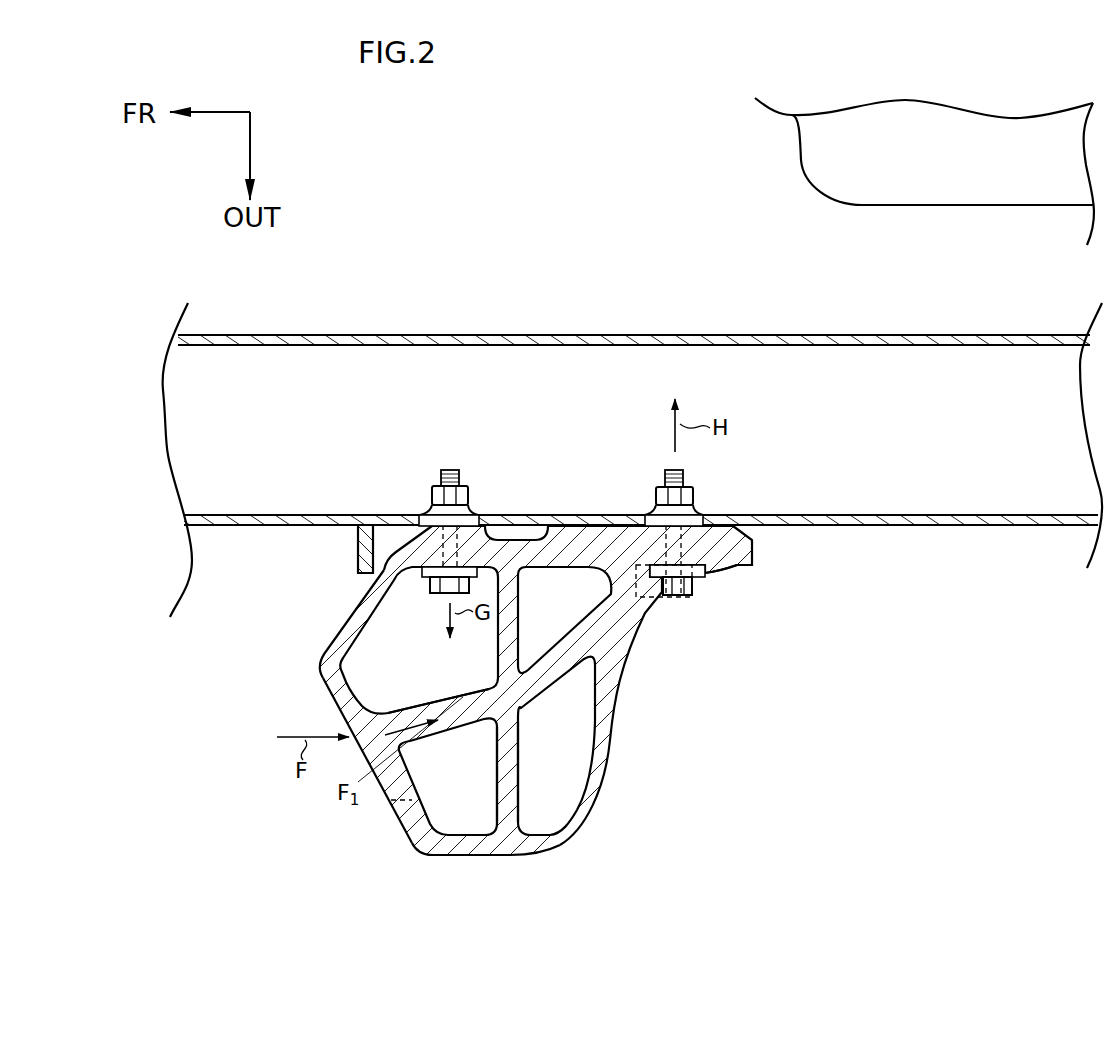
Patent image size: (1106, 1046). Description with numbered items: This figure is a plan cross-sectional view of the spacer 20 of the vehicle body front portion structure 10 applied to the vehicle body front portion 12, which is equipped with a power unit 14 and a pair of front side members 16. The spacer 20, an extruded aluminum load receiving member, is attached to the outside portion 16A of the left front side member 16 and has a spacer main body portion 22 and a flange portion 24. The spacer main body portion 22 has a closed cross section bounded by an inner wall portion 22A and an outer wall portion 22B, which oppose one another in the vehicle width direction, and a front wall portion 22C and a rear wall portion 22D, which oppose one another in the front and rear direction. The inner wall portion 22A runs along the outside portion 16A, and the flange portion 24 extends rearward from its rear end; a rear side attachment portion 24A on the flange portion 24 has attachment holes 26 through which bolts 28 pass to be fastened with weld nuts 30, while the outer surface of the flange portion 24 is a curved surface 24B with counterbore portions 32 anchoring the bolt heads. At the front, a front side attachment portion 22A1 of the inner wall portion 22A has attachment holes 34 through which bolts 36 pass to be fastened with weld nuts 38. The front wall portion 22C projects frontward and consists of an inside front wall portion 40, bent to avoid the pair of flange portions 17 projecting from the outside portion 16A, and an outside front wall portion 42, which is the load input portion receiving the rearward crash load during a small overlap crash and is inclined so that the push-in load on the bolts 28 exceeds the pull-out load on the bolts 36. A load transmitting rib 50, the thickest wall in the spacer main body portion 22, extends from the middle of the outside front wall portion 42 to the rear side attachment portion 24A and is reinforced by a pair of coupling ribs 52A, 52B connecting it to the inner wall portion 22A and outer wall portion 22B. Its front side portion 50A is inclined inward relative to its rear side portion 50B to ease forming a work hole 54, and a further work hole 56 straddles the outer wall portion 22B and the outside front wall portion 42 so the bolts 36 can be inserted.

The vehicle body front portion structure 10 is at (583, 129).
The vehicle body front portion 12 is at (552, 217).
The power unit 14 is at (795, 145).
The front side member 16 is at (940, 333).
The outside portion 16A is at (880, 526).
The flange portion 17 is at (357, 548).
The spacer 20 is at (502, 668).
The spacer main body portion 22 is at (469, 676).
The inner wall portion 22A is at (547, 537).
The front side attachment portion 22A1 is at (428, 548).
The outer wall portion 22B is at (510, 855).
The front wall portion 22C is at (299, 706).
The rear wall portion 22D is at (616, 708).
The flange portion 24 is at (726, 599).
The rear side attachment portion 24A is at (697, 550).
The curved surface 24B is at (656, 600).
The attachment hole 26 is at (712, 522).
The bolt 28 is at (691, 592).
The weld nut 30 is at (657, 495).
The counterbore portion 32 is at (648, 600).
The attachment hole 34 is at (473, 522).
The bolt 36 is at (432, 586).
The weld nut 38 is at (436, 494).
The inside front wall portion 40 is at (338, 633).
The outside front wall portion 42 is at (342, 704).
The load transmitting rib 50 is at (426, 702).
The front side portion 50A is at (440, 733).
The rear side portion 50B is at (553, 680).
The coupling rib 52A is at (518, 603).
The coupling rib 52B is at (518, 778).
The work hole 54 is at (471, 690).
The work hole 56 is at (466, 842).